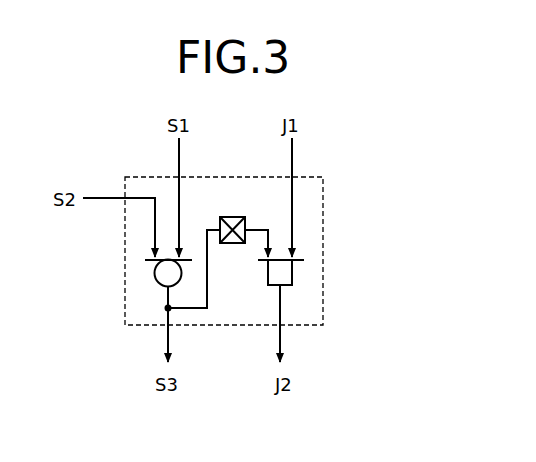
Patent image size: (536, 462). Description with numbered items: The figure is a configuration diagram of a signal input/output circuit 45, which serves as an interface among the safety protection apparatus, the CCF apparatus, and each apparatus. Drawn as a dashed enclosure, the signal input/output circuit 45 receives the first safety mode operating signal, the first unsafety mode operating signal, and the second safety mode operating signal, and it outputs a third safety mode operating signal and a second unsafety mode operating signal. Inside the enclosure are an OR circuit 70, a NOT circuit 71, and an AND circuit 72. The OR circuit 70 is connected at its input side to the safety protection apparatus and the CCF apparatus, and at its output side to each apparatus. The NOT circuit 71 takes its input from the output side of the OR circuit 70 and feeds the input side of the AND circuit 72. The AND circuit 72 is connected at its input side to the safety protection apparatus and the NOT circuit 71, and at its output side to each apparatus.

The signal input/output circuit 45 is at (323, 218).
The OR circuit 70 is at (150, 282).
The NOT circuit 71 is at (234, 249).
The AND circuit 72 is at (303, 283).